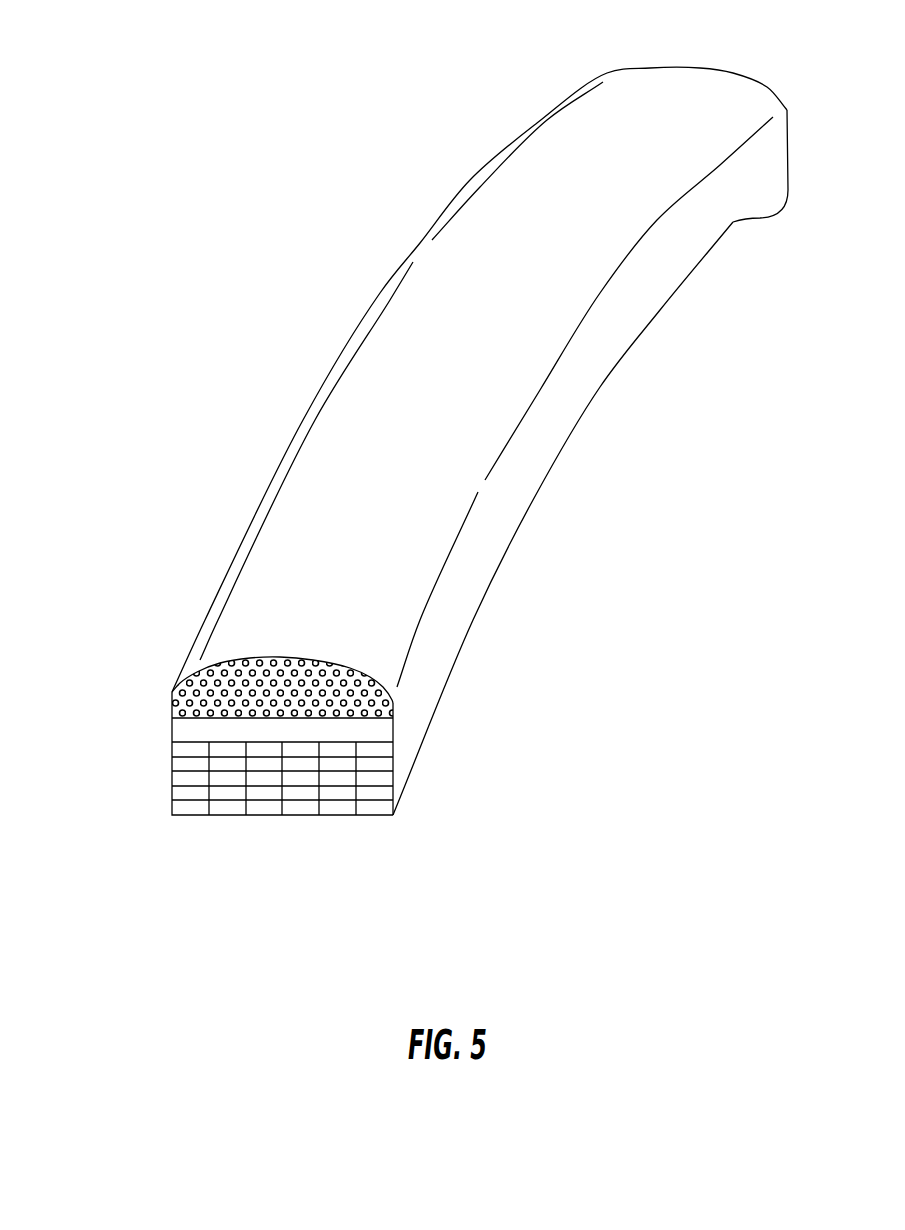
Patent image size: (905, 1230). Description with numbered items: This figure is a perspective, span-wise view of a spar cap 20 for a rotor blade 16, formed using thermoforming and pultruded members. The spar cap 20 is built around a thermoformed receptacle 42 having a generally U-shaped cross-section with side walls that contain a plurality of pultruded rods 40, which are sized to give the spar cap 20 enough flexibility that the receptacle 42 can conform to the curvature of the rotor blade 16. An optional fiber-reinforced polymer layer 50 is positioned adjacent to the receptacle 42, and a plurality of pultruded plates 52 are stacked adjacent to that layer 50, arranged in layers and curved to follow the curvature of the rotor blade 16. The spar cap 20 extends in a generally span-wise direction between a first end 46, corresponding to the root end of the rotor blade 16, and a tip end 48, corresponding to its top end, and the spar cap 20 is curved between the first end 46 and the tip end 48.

The rotor blade 16 is at (248, 130).
The tip end 48 is at (617, 88).
The first end 46 is at (207, 612).
The pultruded rods 40 is at (178, 690).
The thermoformed receptacle 42 is at (393, 705).
The fiber-reinforced polymer layer 50 is at (177, 728).
The spar cap 20 is at (150, 786).
The pultruded plates 52 is at (220, 808).